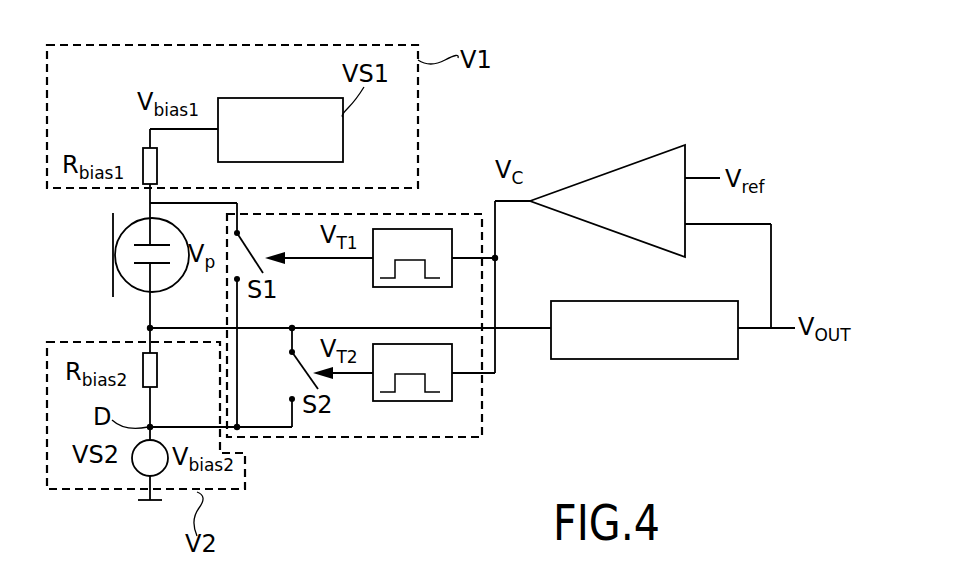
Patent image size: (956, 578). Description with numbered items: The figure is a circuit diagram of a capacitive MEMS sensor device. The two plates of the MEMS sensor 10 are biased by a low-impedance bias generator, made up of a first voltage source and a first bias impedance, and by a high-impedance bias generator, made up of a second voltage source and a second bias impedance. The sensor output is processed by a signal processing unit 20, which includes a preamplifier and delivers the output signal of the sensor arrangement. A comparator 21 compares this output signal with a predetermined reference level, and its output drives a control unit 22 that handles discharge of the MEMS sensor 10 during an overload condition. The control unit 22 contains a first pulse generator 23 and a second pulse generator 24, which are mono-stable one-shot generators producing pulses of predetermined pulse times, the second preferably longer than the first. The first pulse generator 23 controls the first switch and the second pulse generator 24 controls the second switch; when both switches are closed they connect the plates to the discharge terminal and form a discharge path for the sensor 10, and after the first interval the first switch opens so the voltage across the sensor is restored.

The MEMS sensor 10 is at (113, 265).
The signal processing unit 20 is at (650, 359).
The comparator 21 is at (615, 169).
The control unit 22 is at (357, 437).
The first pulse generator 23 is at (445, 228).
The second pulse generator 24 is at (430, 401).